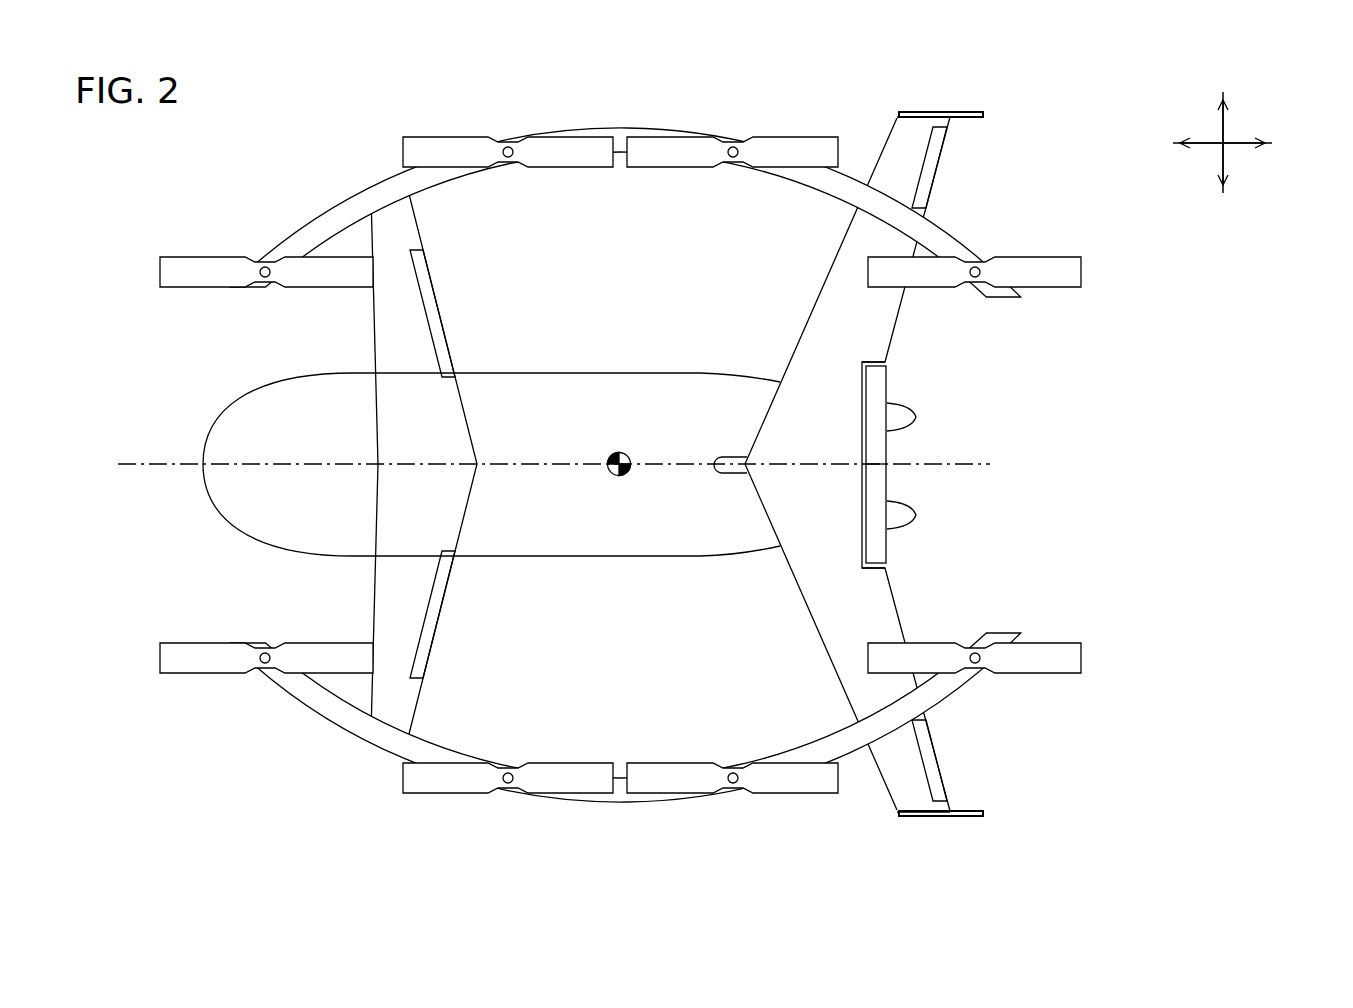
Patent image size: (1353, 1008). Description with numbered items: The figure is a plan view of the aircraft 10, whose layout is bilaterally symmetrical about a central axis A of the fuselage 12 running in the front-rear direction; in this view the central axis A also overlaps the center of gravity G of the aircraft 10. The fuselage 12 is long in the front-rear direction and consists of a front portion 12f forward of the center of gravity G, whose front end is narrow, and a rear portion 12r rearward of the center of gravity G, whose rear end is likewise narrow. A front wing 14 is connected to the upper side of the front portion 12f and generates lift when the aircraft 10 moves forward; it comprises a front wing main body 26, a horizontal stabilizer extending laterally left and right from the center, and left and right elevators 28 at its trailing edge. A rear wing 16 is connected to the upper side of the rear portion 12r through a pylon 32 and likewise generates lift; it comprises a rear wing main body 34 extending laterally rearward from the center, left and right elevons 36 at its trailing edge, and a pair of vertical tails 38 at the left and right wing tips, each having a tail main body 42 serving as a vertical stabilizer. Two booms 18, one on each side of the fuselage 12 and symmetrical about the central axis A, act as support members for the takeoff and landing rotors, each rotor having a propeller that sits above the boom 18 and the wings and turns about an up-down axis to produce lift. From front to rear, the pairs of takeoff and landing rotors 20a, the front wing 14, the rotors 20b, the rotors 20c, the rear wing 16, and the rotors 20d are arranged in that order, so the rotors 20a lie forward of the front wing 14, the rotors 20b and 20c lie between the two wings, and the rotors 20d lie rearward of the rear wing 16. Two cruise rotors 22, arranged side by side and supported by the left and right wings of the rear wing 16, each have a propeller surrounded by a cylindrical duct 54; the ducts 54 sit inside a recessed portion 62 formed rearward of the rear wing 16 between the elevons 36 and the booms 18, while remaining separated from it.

The aircraft 10 is at (146, 163).
The fuselage 12 is at (544, 366).
The front portion 12f is at (223, 479).
The rear portion 12r is at (754, 396).
The front wing 14 is at (369, 357).
The rear wing 16 is at (812, 280).
The boom 18 is at (332, 210).
The takeoff and landing rotor 20a is at (218, 708).
The takeoff and landing rotor 20b is at (559, 170).
The takeoff and landing rotor 20c is at (697, 170).
The takeoff and landing rotor 20d is at (1071, 291).
The cruise rotor 22 is at (894, 383).
The front wing main body 26 is at (390, 307).
The elevator 28 is at (423, 300).
The pylon 32 is at (717, 473).
The rear wing main body 34 is at (830, 312).
The elevon 36 is at (930, 158).
The vertical tail 38 is at (986, 110).
The tail main body 42 is at (967, 117).
The duct 54 is at (883, 365).
The recessed portion 62 is at (866, 486).
The central axis A is at (539, 465).
The center of gravity G is at (609, 478).